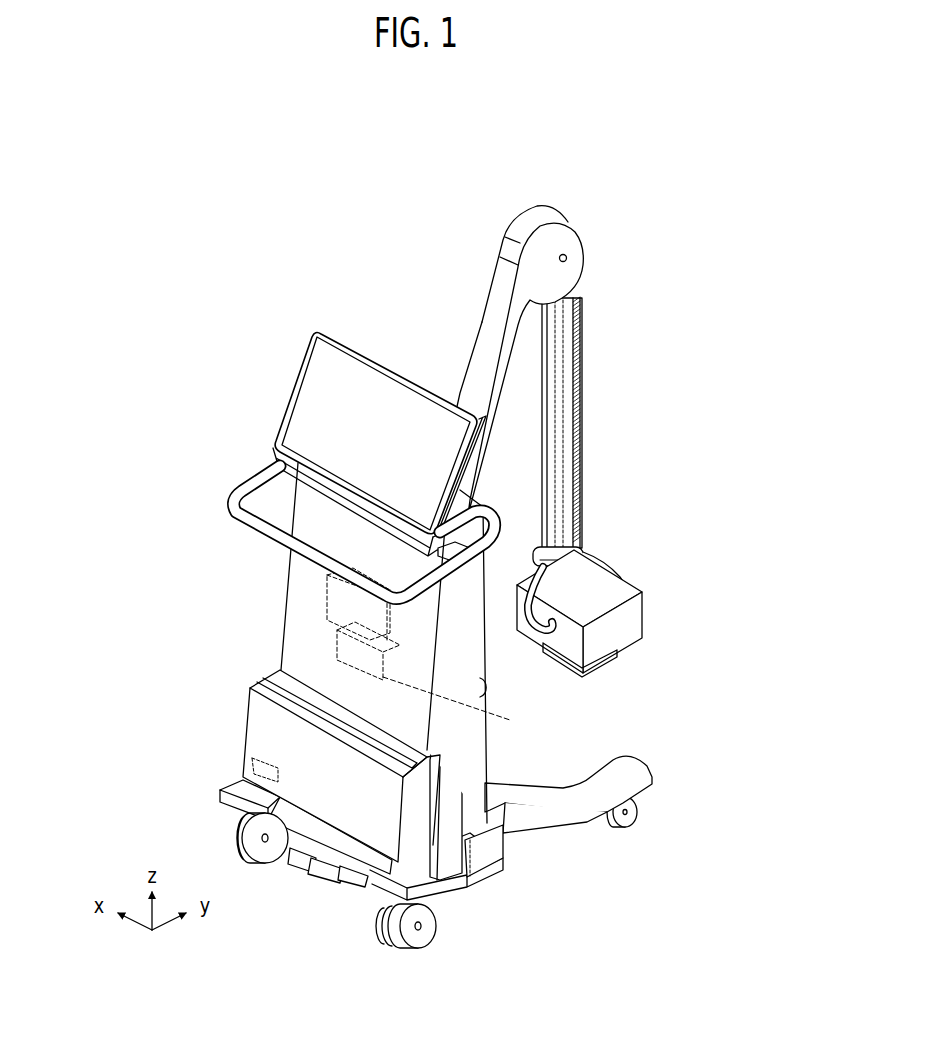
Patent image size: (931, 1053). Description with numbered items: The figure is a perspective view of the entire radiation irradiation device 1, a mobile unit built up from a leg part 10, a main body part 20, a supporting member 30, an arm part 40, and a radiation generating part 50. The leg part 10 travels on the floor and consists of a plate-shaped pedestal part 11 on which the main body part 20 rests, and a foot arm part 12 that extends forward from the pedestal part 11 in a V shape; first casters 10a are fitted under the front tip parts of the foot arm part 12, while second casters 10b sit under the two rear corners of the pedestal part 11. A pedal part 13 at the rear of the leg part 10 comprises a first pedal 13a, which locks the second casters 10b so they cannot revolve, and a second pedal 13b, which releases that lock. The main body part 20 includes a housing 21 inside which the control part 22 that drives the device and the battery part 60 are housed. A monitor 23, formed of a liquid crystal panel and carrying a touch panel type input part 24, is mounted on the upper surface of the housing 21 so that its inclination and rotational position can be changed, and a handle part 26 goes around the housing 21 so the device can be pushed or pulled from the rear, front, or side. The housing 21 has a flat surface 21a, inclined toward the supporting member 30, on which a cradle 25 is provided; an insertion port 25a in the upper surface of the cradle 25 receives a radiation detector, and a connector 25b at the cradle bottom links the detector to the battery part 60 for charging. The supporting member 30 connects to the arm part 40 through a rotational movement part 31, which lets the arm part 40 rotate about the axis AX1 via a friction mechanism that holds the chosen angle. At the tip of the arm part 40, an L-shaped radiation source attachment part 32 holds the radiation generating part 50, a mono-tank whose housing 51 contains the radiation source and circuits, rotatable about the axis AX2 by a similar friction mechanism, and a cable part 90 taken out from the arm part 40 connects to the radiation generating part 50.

The radiation irradiation device 1 is at (403, 152).
The leg part 10 is at (401, 868).
The first casters 10a is at (629, 828).
The second casters 10b is at (242, 835).
The pedestal part 11 is at (480, 862).
The foot arm part 12 is at (540, 792).
The pedal part 13 is at (306, 898).
The first pedal 13a is at (355, 878).
The second pedal 13b is at (300, 863).
The main body part 20 is at (356, 643).
The housing 21 is at (356, 643).
The flat surface 21a is at (292, 616).
The control part 22 is at (325, 575).
The monitor 23 is at (365, 417).
The touch panel type input part 24 is at (305, 360).
The cradle 25 is at (305, 753).
The insertion port 25a is at (258, 690).
The connector 25b is at (254, 768).
The handle part 26 is at (244, 486).
The supporting member 30 is at (547, 420).
The rotational movement part 31 is at (590, 233).
The radiation source attachment part 32 is at (600, 556).
The arm part 40 is at (584, 330).
The radiation generating part 50 is at (644, 613).
The housing 51 is at (644, 601).
The battery part 60 is at (461, 705).
The cable part 90 is at (531, 598).
The rotational movement axis AX1 is at (572, 263).
The rotational movement axis AX2 is at (626, 640).